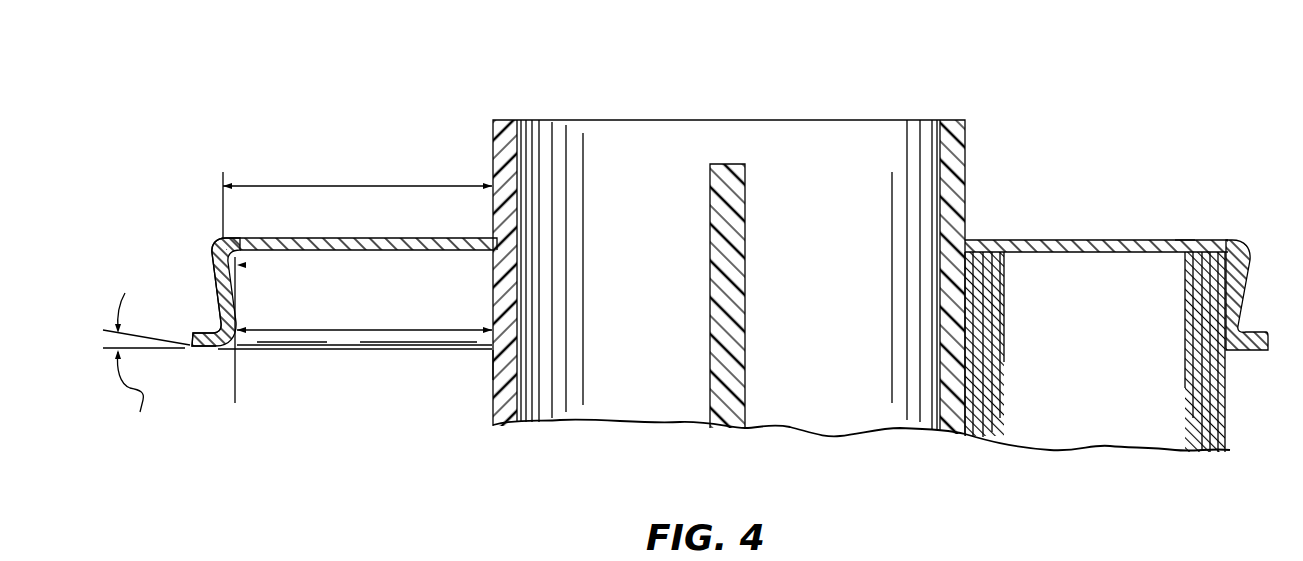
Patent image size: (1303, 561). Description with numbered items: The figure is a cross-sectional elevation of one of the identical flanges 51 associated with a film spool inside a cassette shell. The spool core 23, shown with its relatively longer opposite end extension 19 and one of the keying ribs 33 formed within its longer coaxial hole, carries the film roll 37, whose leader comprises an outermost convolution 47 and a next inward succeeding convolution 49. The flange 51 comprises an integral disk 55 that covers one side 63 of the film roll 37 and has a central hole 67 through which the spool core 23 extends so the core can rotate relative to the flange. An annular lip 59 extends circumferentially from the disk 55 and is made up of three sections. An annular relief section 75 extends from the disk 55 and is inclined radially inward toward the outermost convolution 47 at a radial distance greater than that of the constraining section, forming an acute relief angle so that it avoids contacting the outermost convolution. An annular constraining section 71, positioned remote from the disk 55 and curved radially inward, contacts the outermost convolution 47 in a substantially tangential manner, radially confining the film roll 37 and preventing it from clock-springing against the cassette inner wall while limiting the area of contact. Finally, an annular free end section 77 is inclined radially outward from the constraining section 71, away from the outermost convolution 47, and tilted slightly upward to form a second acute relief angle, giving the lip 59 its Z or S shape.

The longer opposite end extension 19 is at (510, 124).
The spool core 23 is at (519, 391).
The keying rib 33 is at (745, 218).
The film roll 37 is at (1082, 396).
The outermost convolution 47 is at (235, 382).
The next inward succeeding convolution 49 is at (1225, 428).
The flange 51 is at (713, 285).
The disk 55 is at (403, 238).
The annular lip 59 is at (210, 268).
The side of the film roll 63 is at (1191, 252).
The central hole 67 is at (497, 241).
The annular constraining section 71 is at (214, 333).
The annular relief section 75 is at (217, 302).
The annular free end section 77 is at (193, 349).